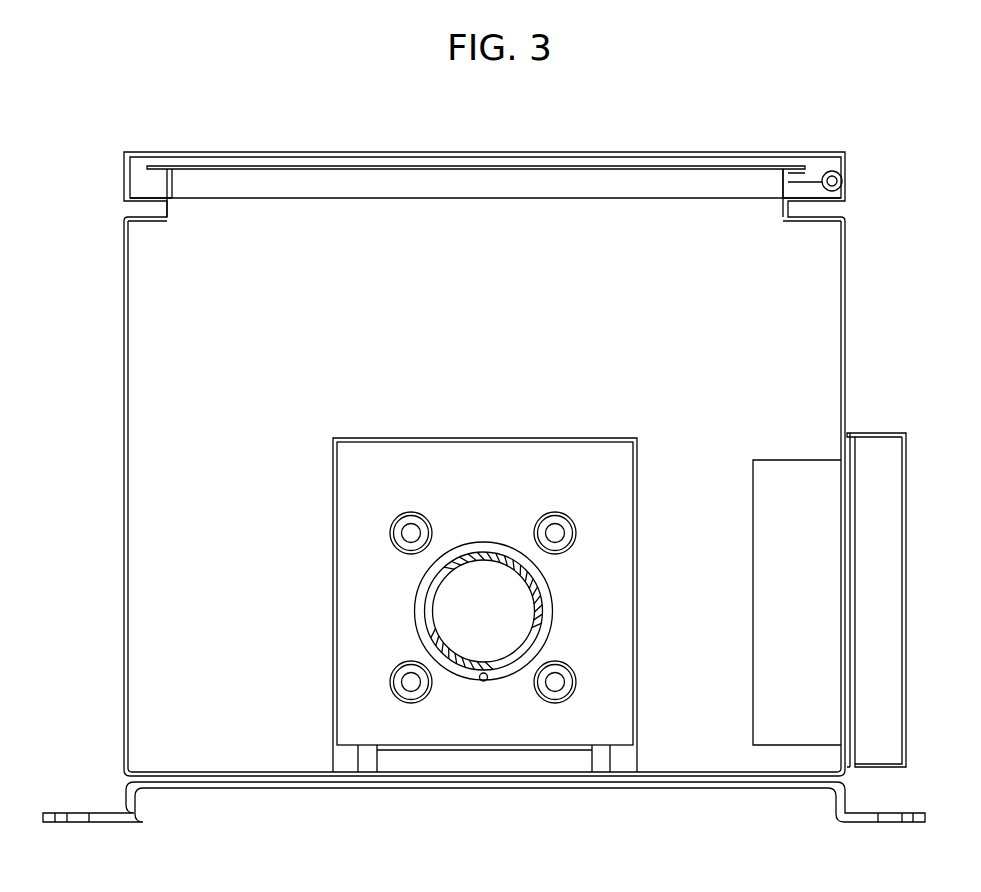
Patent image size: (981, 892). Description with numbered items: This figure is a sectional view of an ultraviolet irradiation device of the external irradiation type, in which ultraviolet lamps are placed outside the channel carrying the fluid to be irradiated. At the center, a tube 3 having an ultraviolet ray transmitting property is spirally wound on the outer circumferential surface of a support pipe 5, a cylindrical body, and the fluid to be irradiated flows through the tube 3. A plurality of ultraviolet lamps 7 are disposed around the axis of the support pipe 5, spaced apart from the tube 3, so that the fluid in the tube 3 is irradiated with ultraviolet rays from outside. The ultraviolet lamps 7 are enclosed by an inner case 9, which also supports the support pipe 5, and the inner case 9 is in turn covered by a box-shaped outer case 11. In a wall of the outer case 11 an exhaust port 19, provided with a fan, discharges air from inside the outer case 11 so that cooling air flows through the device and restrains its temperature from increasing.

The tube 3 is at (418, 578).
The support pipe 5 is at (426, 622).
The ultraviolet lamps 7 is at (549, 515).
The inner case 9 is at (569, 438).
The outer case 11 is at (847, 290).
The exhaust port 19 is at (905, 526).